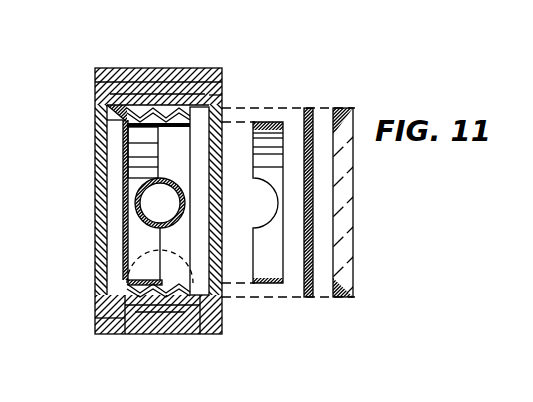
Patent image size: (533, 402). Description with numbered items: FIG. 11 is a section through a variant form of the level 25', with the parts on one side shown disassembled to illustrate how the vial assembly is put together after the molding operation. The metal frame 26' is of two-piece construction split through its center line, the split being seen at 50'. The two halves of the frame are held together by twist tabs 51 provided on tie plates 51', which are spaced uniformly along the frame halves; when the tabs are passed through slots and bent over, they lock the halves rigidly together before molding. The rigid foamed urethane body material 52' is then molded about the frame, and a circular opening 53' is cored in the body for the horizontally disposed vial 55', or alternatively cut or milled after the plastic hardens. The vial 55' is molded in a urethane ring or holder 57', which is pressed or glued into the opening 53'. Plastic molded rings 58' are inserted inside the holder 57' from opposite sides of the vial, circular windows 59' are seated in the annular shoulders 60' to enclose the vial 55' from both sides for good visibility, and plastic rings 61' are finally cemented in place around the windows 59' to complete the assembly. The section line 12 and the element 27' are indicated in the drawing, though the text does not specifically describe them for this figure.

The section line 12- 12 is at (105, 43).
The level 25' is at (266, 201).
The metal frame 26' is at (266, 201).
The base 27' is at (98, 331).
The center line split 50' is at (266, 201).
The twist tabs 51 is at (155, 212).
The tie plates 51' is at (266, 201).
The rigid foamed urethane body material 52' is at (244, 76).
The circular openings 53' is at (266, 201).
The vial 55' is at (266, 201).
The urethane ring or holder 57' is at (89, 126).
The plastic molded rings 58' is at (266, 201).
The circular windows 59' is at (266, 201).
The annular shoulders 60' is at (206, 190).
The plastic rings 61' is at (266, 201).